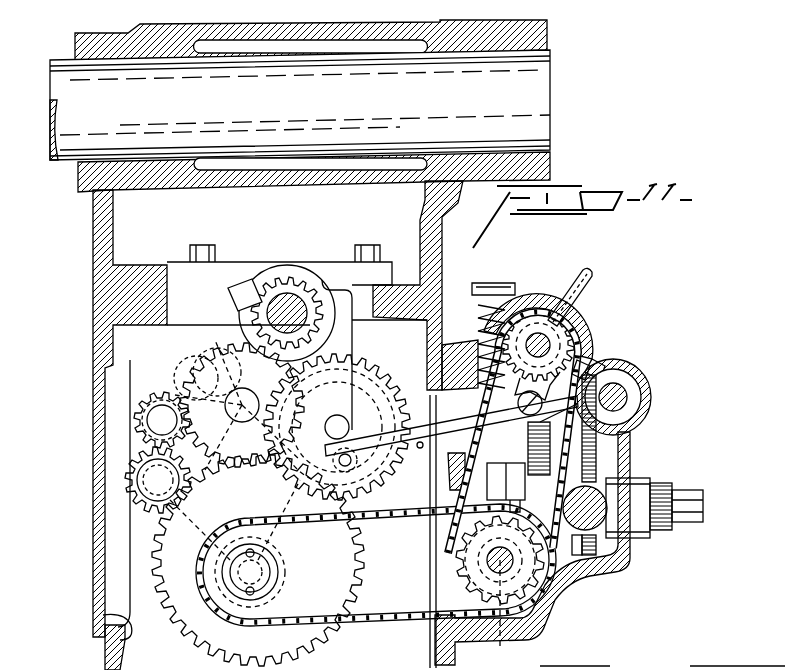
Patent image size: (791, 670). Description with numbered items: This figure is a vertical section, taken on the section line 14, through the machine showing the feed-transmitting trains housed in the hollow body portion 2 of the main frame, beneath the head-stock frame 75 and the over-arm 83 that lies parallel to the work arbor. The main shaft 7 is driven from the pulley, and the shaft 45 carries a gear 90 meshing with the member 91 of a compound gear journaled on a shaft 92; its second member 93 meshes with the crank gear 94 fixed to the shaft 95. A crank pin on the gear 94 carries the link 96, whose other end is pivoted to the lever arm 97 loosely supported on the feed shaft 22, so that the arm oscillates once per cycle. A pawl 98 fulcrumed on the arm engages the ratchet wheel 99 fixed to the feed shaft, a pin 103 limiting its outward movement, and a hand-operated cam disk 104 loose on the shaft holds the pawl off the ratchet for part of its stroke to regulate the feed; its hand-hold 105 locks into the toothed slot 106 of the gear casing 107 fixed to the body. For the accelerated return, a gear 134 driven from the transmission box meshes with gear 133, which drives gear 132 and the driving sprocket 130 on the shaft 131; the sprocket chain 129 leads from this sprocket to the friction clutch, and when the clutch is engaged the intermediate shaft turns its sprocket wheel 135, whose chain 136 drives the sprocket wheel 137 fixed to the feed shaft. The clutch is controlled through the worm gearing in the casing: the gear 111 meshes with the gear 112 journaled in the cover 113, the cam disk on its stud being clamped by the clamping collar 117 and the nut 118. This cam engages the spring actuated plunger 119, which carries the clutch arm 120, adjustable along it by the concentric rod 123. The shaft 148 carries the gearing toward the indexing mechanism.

The over-arm 83 is at (300, 105).
The frame 75 is at (115, 248).
The hollow body portion 2 is at (122, 648).
The gear 111 is at (632, 440).
The shaft 148 is at (641, 397).
The cap or cover 113 is at (612, 570).
The gear 90 is at (310, 296).
The shaft 45 is at (288, 311).
The compound gear member 91 is at (195, 360).
The second member of compound gear 93 is at (218, 365).
The shaft 92 is at (242, 388).
The crank gear 94 is at (372, 392).
The shaft 95 is at (340, 427).
The gear 134 is at (150, 422).
The main shaft 7 is at (148, 412).
The gear 133 is at (128, 495).
The gear 132 is at (340, 560).
The shaft 131 is at (243, 577).
The driving sprocket 130 is at (272, 572).
The sprocket chain 129 is at (392, 618).
The clutch arm 120 is at (498, 566).
The feed shaft 22 is at (530, 330).
The shaft 14 is at (539, 333).
The sprocket wheel 135 is at (456, 568).
The hand-hold 105 is at (590, 280).
The gear casing 107 is at (497, 322).
The cam disk 104 is at (592, 345).
The lever arm 97 is at (584, 452).
The pin 103 is at (528, 440).
The ratchet wheel 99 is at (565, 328).
The slot 106 is at (588, 370).
The sprocket chain 136 is at (485, 520).
The sprocket wheel 137 is at (451, 426).
The link 96 is at (419, 450).
The pawl 98 is at (540, 422).
The gear 112 is at (600, 492).
The spring actuated plunger 119 is at (640, 480).
The clamping collar 117 is at (668, 490).
The nut 118 is at (700, 497).
The rod 123 is at (600, 545).